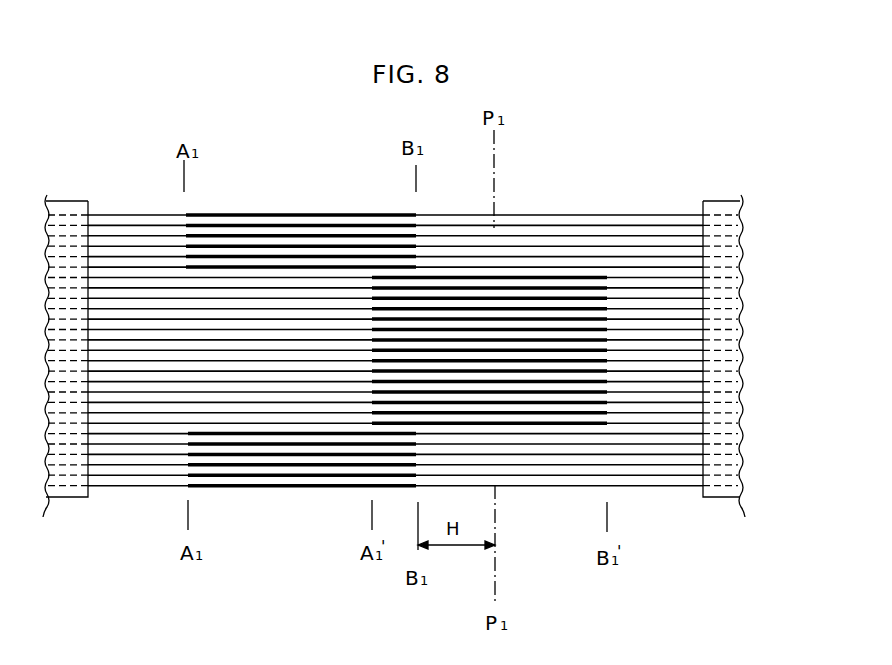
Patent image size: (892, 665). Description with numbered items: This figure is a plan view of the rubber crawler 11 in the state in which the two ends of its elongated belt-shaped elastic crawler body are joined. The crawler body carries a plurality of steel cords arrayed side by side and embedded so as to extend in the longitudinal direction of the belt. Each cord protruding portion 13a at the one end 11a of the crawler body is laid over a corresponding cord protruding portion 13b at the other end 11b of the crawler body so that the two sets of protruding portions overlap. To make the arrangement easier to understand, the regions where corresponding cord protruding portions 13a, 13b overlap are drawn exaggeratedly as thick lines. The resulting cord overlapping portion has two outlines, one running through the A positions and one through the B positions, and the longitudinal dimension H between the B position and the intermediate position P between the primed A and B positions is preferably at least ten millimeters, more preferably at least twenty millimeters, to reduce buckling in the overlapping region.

The rubber crawler 11 is at (678, 547).
The one end of the crawler body 11a is at (72, 200).
The other end of the crawler body 11b is at (724, 200).
The cord protruding portions 13a is at (114, 226).
The cord protruding portions 13b is at (596, 216).